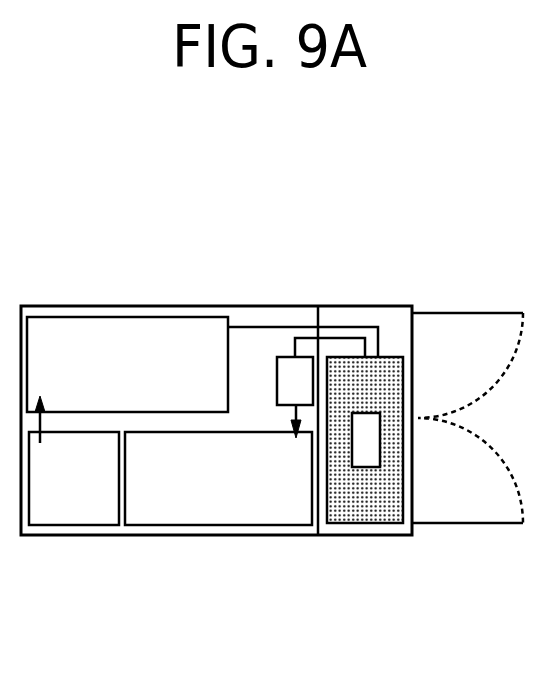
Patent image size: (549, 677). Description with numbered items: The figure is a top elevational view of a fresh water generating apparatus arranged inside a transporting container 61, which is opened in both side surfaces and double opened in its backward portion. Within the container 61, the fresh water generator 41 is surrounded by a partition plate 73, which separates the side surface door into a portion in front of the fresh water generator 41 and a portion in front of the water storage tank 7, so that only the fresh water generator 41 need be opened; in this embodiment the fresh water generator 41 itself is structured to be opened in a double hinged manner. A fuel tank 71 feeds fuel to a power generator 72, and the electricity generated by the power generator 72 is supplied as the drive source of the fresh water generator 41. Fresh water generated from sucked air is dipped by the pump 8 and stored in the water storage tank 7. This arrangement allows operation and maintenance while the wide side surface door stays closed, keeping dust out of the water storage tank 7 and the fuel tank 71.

The transporting container 61 is at (408, 306).
The partition plate 73 is at (322, 307).
The power generator 72 is at (86, 338).
The pump 8 is at (287, 373).
The fresh water generator 41 is at (367, 512).
The fuel tank 71 is at (60, 513).
The water storage tank 7 is at (200, 500).